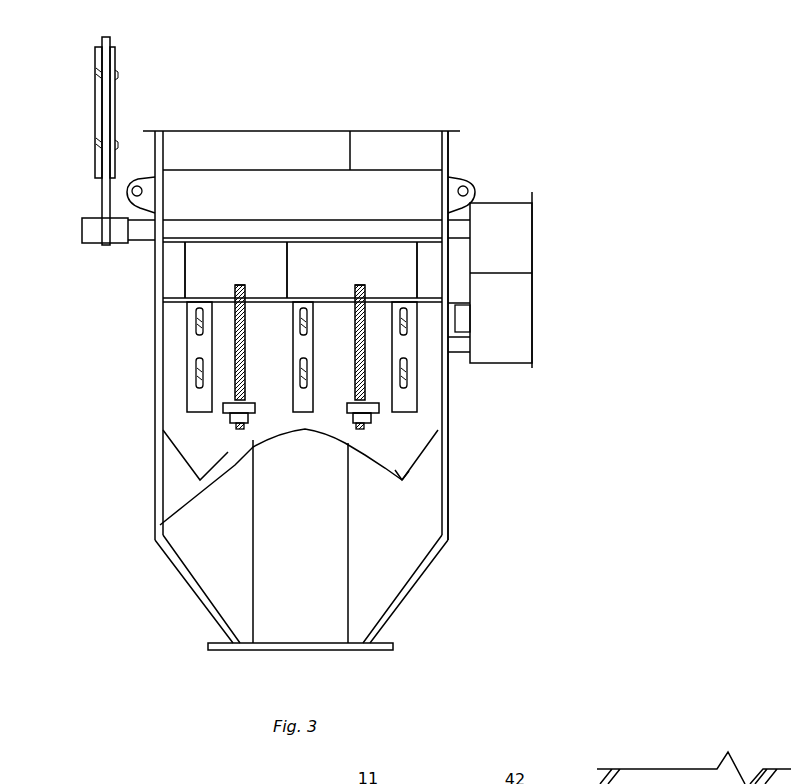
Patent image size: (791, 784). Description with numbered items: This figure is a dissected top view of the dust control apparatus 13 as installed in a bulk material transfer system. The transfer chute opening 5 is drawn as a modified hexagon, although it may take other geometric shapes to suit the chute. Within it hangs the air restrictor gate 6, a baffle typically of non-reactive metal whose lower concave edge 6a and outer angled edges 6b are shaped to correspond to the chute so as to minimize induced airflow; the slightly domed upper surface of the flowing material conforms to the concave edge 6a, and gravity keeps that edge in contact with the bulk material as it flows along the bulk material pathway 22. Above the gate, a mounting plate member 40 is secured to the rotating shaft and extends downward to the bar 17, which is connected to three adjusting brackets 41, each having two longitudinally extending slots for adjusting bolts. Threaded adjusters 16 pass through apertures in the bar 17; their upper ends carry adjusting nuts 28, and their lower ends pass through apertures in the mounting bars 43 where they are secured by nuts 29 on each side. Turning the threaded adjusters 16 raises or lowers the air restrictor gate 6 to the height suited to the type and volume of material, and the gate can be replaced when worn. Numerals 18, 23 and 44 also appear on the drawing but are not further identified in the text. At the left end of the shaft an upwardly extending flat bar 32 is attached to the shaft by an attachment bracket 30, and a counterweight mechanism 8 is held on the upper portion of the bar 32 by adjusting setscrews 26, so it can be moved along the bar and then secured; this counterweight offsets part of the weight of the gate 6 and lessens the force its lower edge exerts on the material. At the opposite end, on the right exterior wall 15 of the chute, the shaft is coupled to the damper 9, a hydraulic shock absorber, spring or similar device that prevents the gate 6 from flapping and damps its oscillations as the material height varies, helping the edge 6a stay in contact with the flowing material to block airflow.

The transfer chute opening 5 is at (207, 563).
The air restrictor gate 6 is at (402, 485).
The lower concave edge 6a is at (375, 461).
The outer angled edge 6b is at (173, 451).
The counterweight mechanism 8 is at (138, 131).
The damper 9 is at (541, 207).
The dust control apparatus 13 is at (414, 617).
The right exterior wall 15 is at (447, 490).
The threaded adjuster 16 is at (353, 343).
The bar 17 is at (383, 297).
The bolt head 18 is at (225, 276).
The adjusting nut 28 is at (360, 290).
The bulk material pathway 22 is at (372, 568).
The plate 23 is at (195, 380).
The adjusting setscrew 26 is at (96, 140).
The nut 29 is at (214, 474).
The mounting bar 43 is at (214, 474).
The nut 44 is at (360, 420).
The attachment bracket 30 is at (82, 228).
The flat bar 32 is at (108, 37).
The mounting plate member 40 is at (270, 260).
The adjusting bracket 41 is at (187, 338).